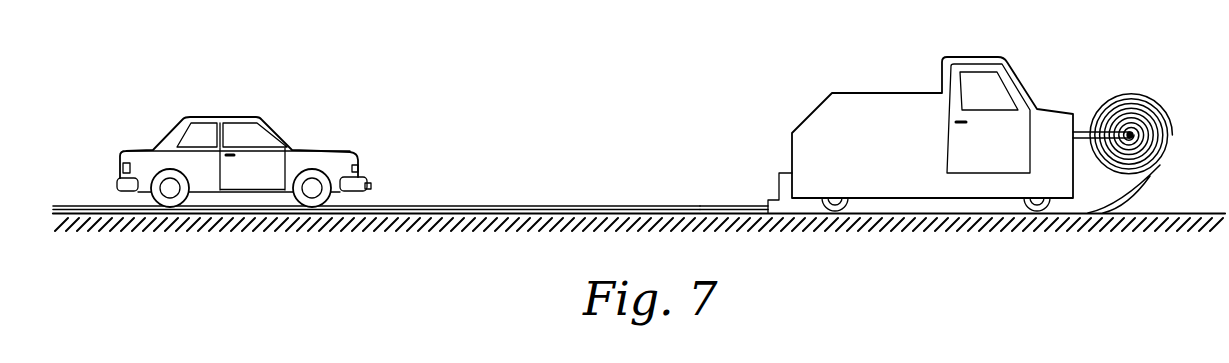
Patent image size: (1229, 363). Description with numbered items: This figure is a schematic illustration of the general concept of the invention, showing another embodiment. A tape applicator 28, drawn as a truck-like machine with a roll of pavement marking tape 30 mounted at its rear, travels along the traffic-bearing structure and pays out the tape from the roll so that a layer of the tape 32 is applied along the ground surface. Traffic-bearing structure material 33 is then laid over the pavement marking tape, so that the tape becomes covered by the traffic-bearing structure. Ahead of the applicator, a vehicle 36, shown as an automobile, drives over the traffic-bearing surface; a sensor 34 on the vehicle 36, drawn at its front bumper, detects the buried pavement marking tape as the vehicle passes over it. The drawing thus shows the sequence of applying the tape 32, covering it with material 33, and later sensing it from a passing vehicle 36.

The tape applicator 28 is at (980, 56).
The pavement marking tape 30 is at (1158, 103).
The layer of tape 32 is at (499, 210).
The traffic-bearing structure material 33 is at (730, 210).
The sensor 34 is at (372, 186).
The vehicle 36 is at (240, 116).